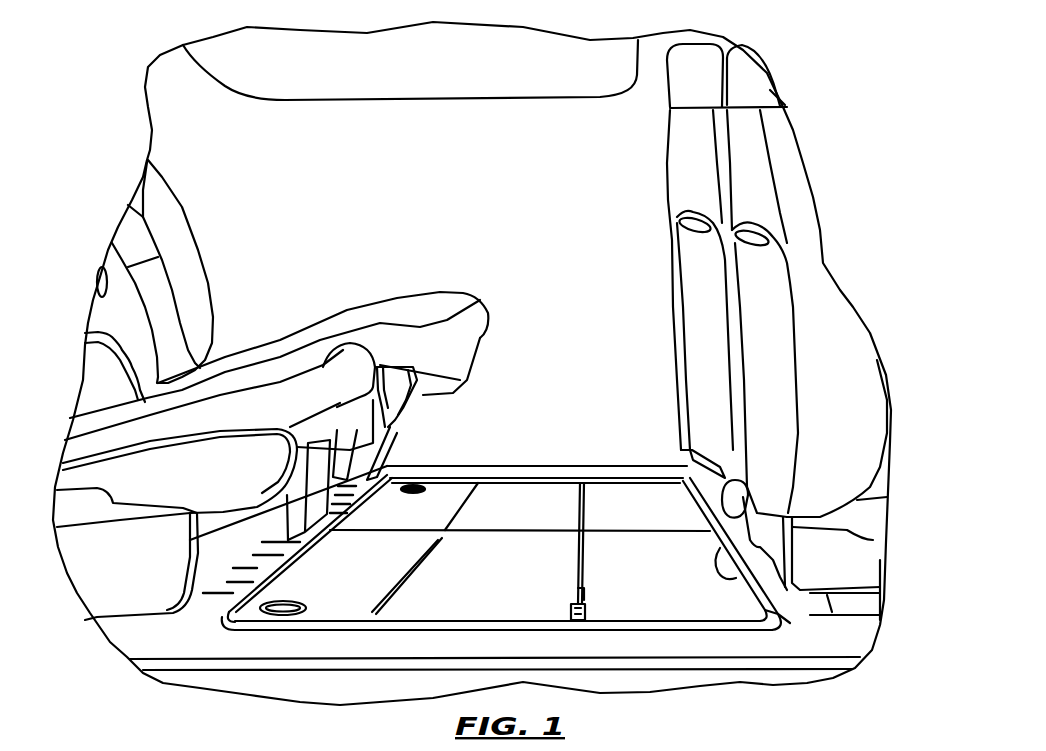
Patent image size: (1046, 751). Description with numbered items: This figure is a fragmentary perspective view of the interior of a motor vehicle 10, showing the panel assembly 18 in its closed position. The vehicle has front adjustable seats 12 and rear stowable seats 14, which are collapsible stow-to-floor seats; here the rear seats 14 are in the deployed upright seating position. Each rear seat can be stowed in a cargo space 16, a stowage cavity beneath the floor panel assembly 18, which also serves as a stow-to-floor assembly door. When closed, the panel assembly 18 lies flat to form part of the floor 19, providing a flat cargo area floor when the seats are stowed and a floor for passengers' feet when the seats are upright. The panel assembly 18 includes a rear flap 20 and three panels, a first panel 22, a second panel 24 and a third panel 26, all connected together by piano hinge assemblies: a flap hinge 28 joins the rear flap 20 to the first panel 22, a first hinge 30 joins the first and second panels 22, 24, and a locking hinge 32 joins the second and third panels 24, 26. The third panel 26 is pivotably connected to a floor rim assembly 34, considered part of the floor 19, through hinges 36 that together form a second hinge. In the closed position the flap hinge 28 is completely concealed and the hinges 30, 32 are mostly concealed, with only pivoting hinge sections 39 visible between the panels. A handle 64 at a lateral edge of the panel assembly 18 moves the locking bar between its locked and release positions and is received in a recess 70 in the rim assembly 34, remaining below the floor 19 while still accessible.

The motor vehicle 10 is at (645, 47).
The front adjustable seats 12 is at (693, 277).
The rear stowable seats 14 is at (458, 286).
The cargo space 16 is at (528, 496).
The panel assembly 18 is at (616, 501).
The floor 19 is at (162, 640).
The rear flap 20 is at (363, 480).
The first panel 22 is at (330, 602).
The second panel 24 is at (433, 605).
The third panel 26 is at (670, 605).
The flap hinge 28 is at (293, 568).
The first hinge 30 is at (432, 541).
The locking hinge 32 is at (583, 560).
The floor rim assembly 34 is at (782, 618).
The hinges 36 is at (750, 582).
The pivoting hinge sections 39 is at (398, 590).
The handle 64 is at (587, 593).
The recess 70 is at (574, 622).